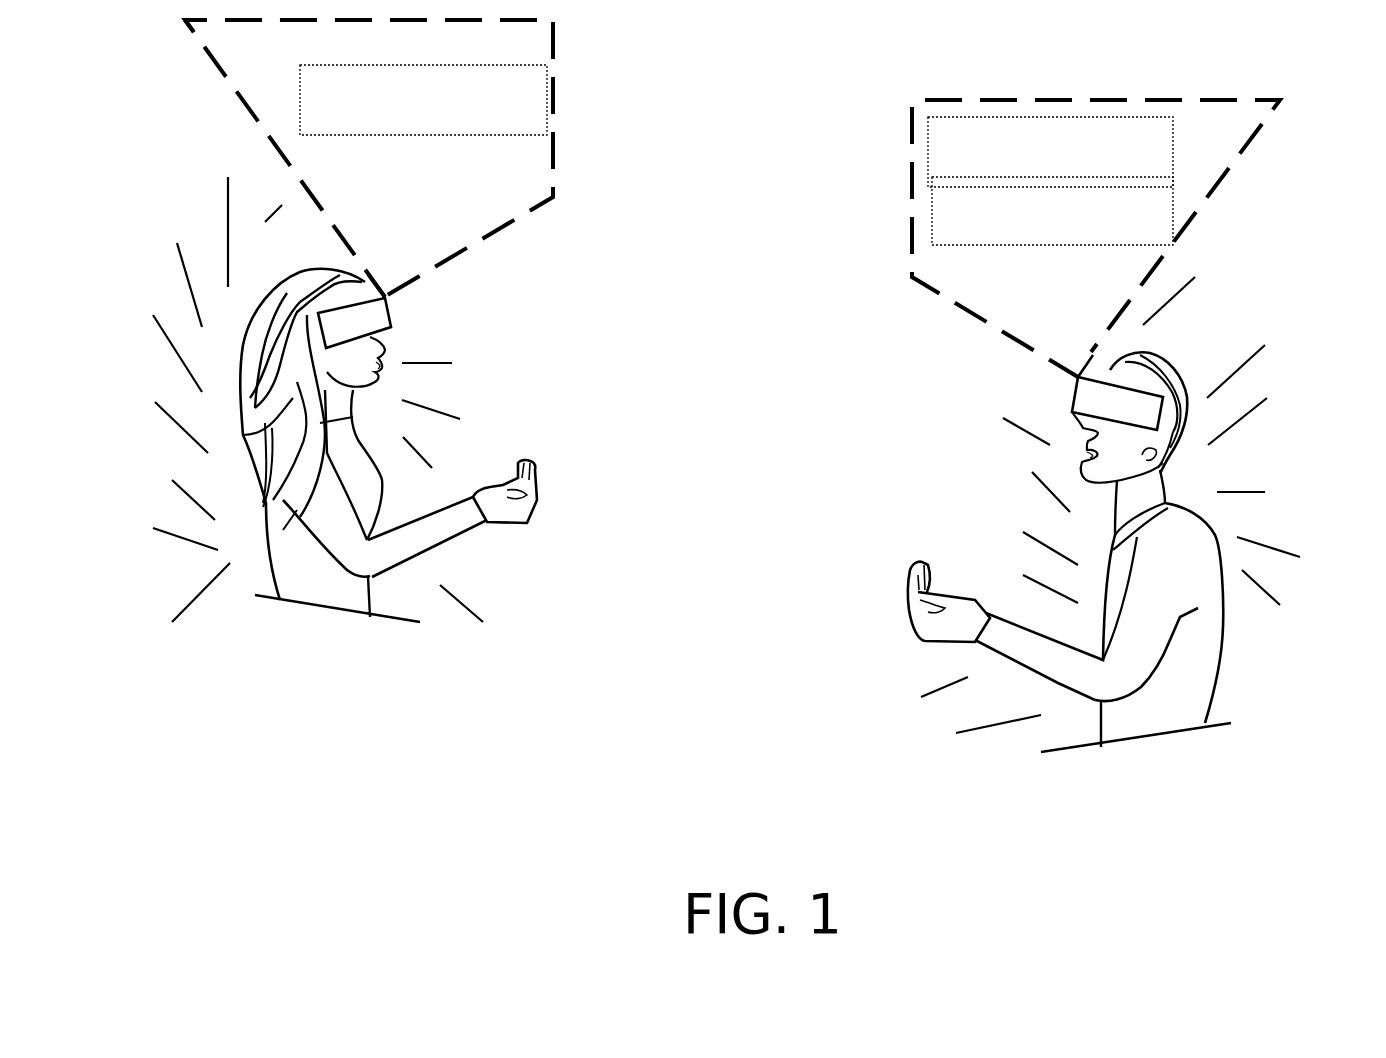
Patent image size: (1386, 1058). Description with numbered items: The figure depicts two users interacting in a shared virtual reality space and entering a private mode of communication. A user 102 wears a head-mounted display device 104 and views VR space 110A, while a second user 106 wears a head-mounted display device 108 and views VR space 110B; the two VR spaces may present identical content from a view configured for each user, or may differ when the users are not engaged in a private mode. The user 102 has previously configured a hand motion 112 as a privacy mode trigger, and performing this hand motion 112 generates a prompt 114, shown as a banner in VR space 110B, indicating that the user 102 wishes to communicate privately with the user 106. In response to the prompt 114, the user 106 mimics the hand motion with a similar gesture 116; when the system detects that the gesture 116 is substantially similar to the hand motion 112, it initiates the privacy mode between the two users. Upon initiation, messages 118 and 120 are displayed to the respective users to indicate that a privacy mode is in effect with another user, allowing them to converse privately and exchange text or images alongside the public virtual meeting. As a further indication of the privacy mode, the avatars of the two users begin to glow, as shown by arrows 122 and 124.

The user 102 is at (408, 430).
The head-mounted display device 104 is at (410, 313).
The user 106 is at (1032, 526).
The head-mounted display device 108 is at (1057, 399).
The VR space 110A is at (436, 250).
The VR space 110B is at (1077, 337).
The hand motion 112 is at (553, 439).
The prompt 114 is at (937, 221).
The gesture 116 is at (887, 527).
The message 118 is at (545, 113).
The message 120 is at (932, 168).
The arrow 122 is at (158, 199).
The arrow 124 is at (1307, 471).